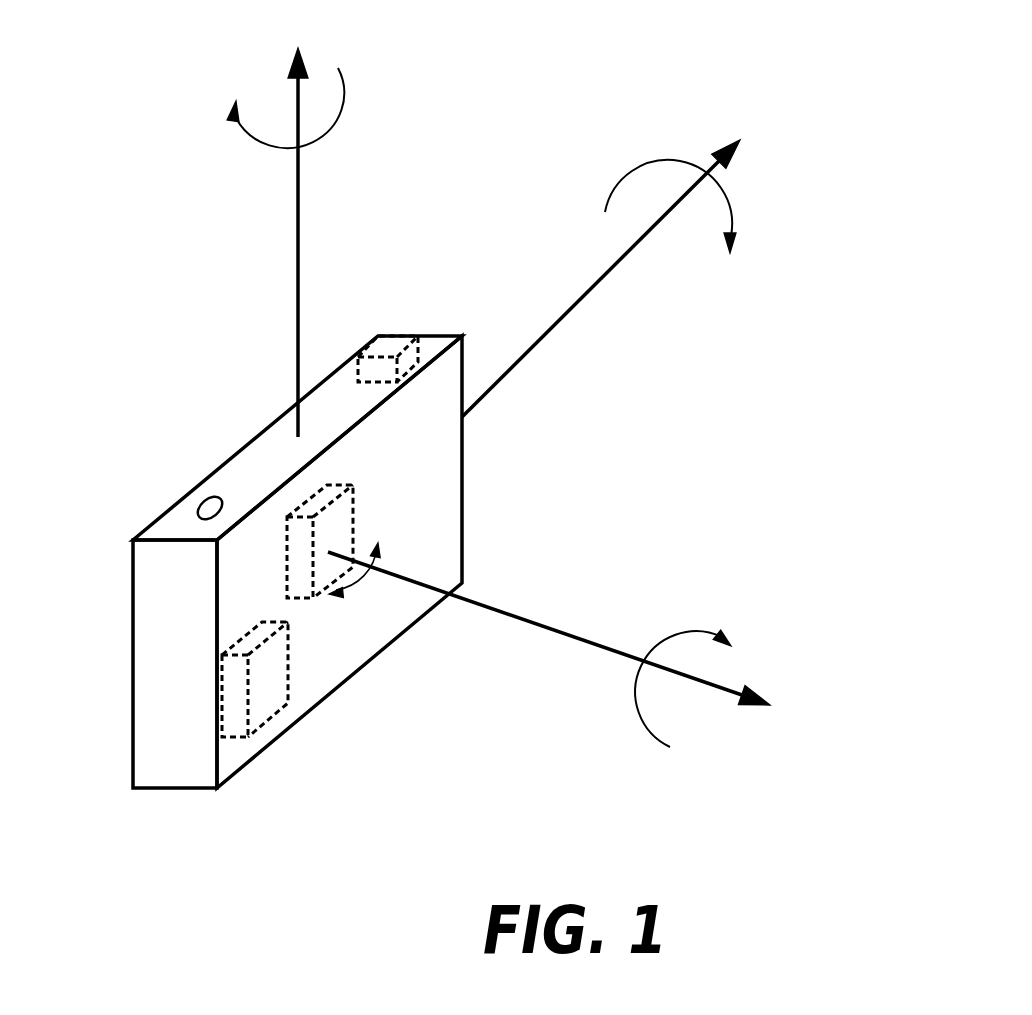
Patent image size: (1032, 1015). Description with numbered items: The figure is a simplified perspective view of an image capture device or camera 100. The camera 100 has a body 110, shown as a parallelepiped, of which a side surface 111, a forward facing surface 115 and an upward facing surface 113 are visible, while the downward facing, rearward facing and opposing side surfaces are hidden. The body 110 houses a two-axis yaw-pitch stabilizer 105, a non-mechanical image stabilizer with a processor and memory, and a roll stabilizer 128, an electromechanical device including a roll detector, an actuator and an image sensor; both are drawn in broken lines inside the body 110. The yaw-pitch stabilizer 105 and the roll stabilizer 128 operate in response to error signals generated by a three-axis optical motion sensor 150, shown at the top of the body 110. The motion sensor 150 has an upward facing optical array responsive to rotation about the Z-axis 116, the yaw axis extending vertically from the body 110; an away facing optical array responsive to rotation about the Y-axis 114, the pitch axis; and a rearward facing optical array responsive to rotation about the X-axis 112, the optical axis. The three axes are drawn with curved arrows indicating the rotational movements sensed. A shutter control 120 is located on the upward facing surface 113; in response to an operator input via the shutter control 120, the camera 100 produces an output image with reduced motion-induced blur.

The image capture device or camera 100 is at (527, 195).
The yaw-pitch stabilizer 105 is at (284, 679).
The body 110 is at (252, 562).
The side surface 111 is at (197, 781).
The X-axis 112 is at (720, 683).
The upward facing surface 113 is at (280, 484).
The Y-axis 114 is at (583, 295).
The forward facing surface 115 is at (444, 431).
The Z-axis 116 is at (297, 245).
The shutter control 120 is at (212, 494).
The roll stabilizer 128 is at (340, 541).
The three-axis optical motion sensor 150 is at (389, 334).